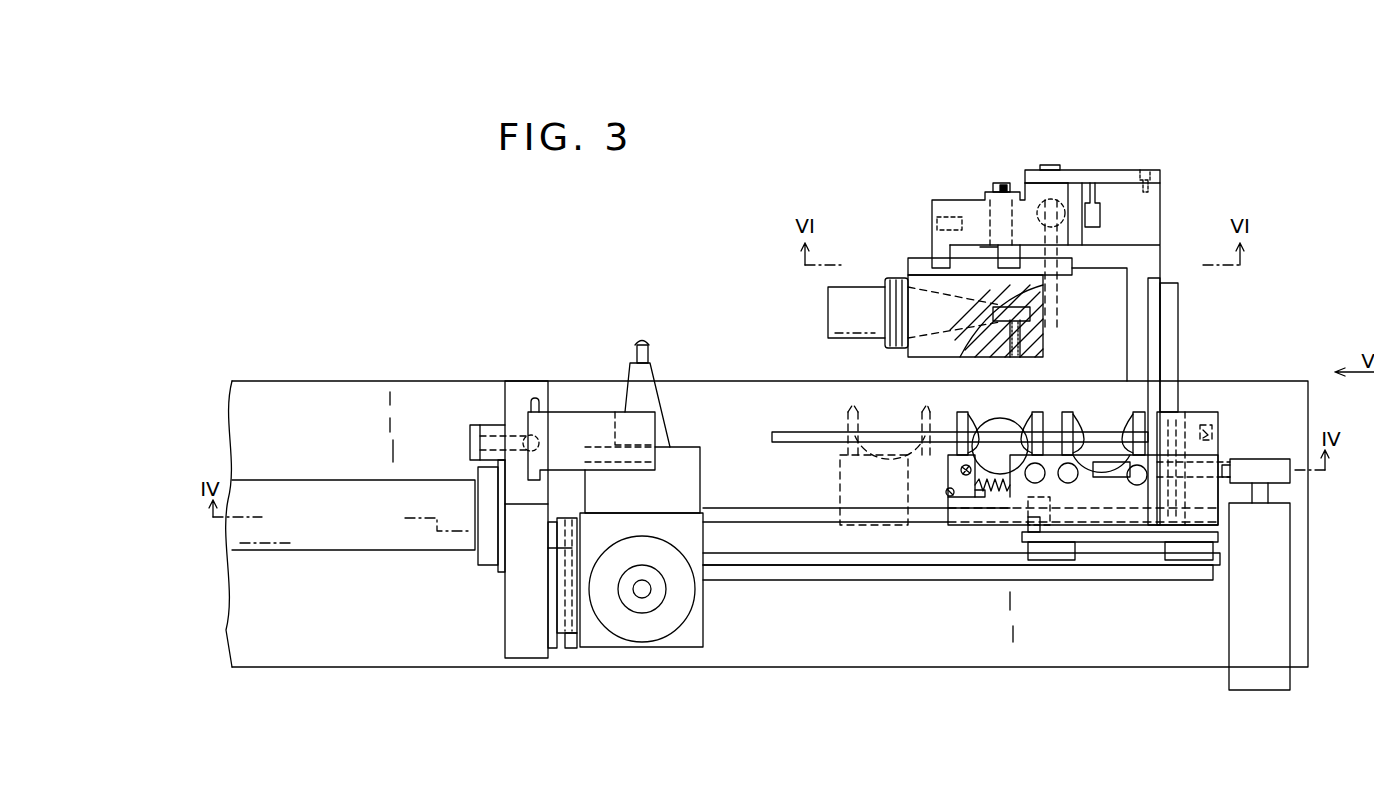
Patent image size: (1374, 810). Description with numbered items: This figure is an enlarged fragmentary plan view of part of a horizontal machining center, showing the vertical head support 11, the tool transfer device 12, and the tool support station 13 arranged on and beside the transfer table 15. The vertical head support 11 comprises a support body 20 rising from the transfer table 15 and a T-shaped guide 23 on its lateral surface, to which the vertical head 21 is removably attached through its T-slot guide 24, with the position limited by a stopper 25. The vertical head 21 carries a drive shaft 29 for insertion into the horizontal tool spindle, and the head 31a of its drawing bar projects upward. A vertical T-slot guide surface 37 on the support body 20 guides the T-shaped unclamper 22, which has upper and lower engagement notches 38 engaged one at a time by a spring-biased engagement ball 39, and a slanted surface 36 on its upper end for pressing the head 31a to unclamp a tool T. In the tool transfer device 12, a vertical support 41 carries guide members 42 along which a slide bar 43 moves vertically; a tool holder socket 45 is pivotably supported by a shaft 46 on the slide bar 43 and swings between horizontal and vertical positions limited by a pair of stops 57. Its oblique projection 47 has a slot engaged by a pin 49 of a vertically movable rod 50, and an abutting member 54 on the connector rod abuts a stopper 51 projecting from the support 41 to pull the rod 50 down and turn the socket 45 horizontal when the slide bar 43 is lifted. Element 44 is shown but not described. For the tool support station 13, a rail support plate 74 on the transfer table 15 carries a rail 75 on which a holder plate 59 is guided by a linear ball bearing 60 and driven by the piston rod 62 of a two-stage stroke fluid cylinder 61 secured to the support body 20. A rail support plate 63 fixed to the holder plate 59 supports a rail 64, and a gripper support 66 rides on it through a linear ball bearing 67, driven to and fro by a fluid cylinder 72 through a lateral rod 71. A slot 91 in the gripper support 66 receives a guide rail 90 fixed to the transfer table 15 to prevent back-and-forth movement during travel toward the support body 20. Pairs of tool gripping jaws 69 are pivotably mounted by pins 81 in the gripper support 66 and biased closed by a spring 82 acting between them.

The vertical head support 11 is at (470, 628).
The tool transfer device 12 is at (1182, 143).
The tool support station 13 is at (1007, 540).
The transfer table 15 is at (371, 655).
The support body 20 is at (527, 650).
The vertical head 21 is at (695, 640).
The unclamper 22 is at (573, 418).
The guide 23 is at (553, 648).
The T-slot guide 24 is at (578, 623).
The stopper 25 is at (573, 650).
The drive shaft 29 is at (650, 375).
The head of drawing bar 31a is at (642, 589).
The slanted surface 36 is at (650, 423).
The T-slot guide surface 37 is at (532, 398).
The engagement notches 38 is at (541, 446).
The engagement ball 39 is at (493, 423).
The vertical support 41 is at (1157, 195).
The guide members 42 is at (1118, 225).
The slide bar 43 is at (970, 208).
The stopper 44 is at (1097, 220).
The tool holder socket 45 is at (920, 348).
The shaft 46 is at (998, 210).
The projection 47 is at (1057, 268).
The pin 49 is at (1037, 332).
The rod 50 is at (1068, 200).
The stopper 51 is at (1082, 167).
The abutting member 54 is at (1045, 163).
The stops 57 is at (1003, 247).
The holder plate 59 is at (1130, 535).
The linear ball bearing 60 is at (1062, 557).
The two-stage stroke fluid cylinder 61 is at (352, 497).
The piston rod 62 is at (808, 513).
The rail support plate 63 is at (1163, 325).
The rail 64 is at (1170, 357).
The gripper support 66 is at (1000, 497).
The linear ball bearing 67 is at (1200, 428).
The tool gripping jaws 69 is at (1032, 425).
The lateral rod 71 is at (1226, 464).
The fluid cylinder 72 is at (1277, 605).
The rail support plate 74 is at (770, 578).
The rail 75 is at (823, 562).
The pins 81 is at (962, 468).
The spring 82 is at (993, 477).
The guide rail 90 is at (800, 432).
The slot 91 is at (1217, 415).
The tool T is at (858, 302).